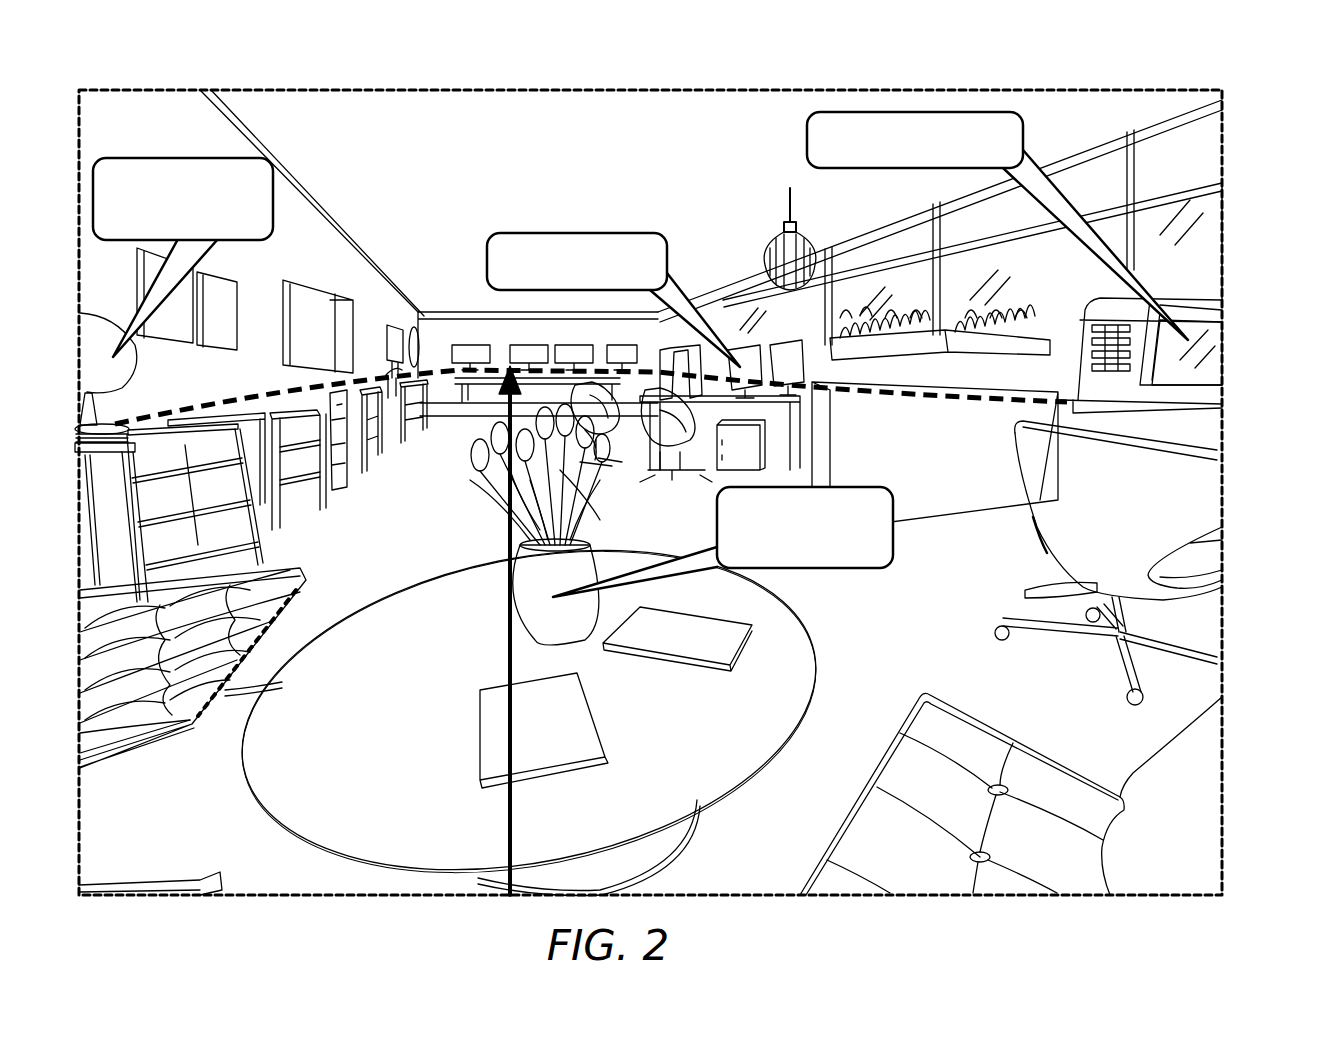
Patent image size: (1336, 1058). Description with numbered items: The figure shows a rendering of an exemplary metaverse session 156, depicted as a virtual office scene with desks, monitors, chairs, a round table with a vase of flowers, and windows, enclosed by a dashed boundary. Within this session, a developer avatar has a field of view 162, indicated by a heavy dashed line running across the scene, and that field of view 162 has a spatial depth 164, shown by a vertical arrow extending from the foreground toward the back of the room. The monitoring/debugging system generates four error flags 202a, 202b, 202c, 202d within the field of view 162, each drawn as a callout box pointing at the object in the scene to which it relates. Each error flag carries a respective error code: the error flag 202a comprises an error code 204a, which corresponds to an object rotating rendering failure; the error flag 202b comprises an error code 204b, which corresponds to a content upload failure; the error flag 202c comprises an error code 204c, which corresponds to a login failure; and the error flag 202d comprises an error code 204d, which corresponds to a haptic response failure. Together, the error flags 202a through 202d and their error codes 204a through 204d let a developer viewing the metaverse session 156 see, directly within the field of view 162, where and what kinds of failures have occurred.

The metaverse session 156 is at (1235, 103).
The field of view 162 is at (927, 400).
The spatial depth 164 is at (470, 572).
The error flag 202a is at (180, 158).
The error flag 202b is at (806, 131).
The error flag 202c is at (573, 234).
The error flag 202d is at (715, 527).
The error code 204a is at (183, 257).
The error code 204b is at (997, 226).
The error code 204c is at (613, 300).
The error code 204d is at (723, 542).